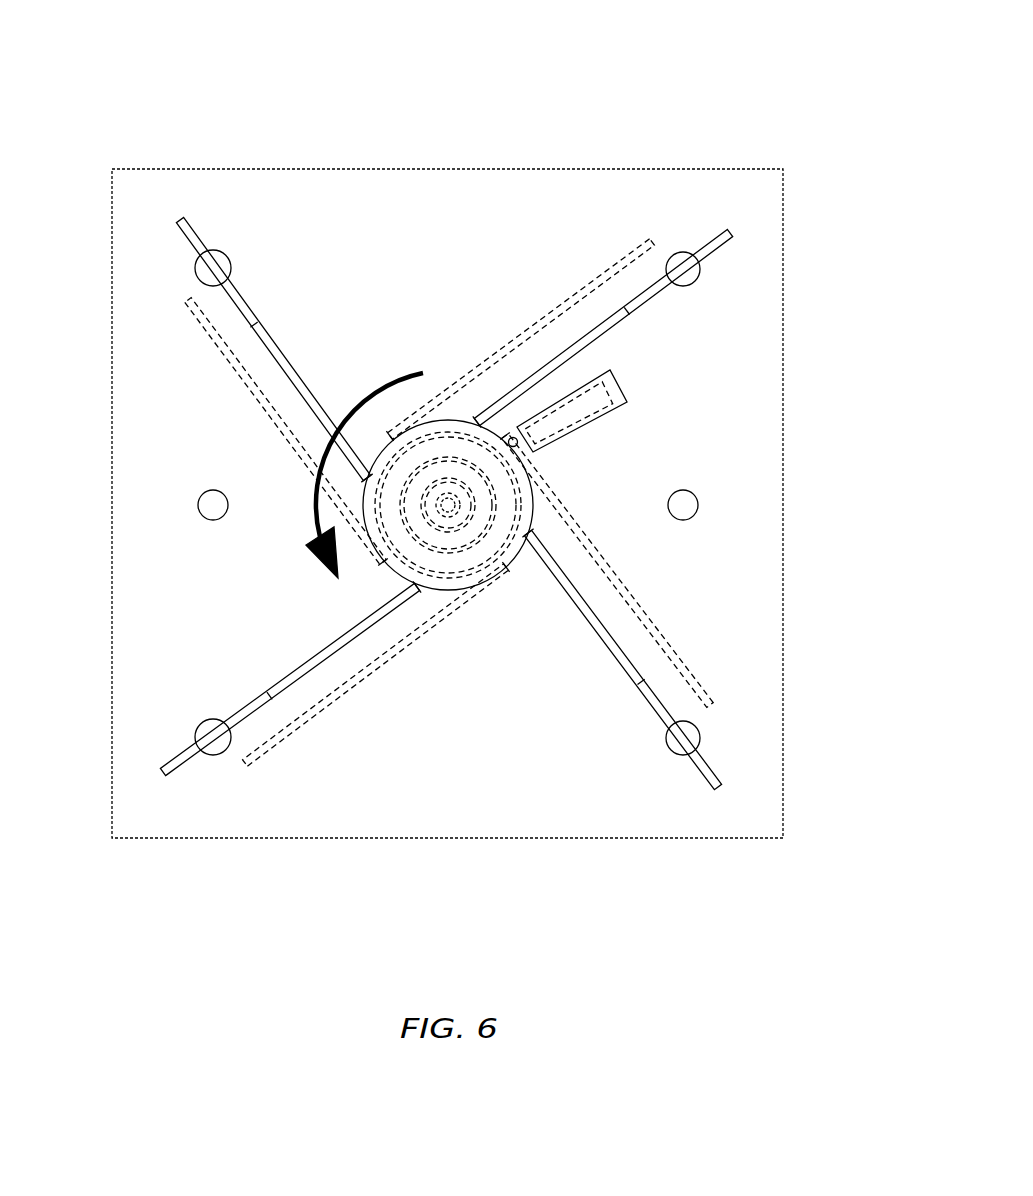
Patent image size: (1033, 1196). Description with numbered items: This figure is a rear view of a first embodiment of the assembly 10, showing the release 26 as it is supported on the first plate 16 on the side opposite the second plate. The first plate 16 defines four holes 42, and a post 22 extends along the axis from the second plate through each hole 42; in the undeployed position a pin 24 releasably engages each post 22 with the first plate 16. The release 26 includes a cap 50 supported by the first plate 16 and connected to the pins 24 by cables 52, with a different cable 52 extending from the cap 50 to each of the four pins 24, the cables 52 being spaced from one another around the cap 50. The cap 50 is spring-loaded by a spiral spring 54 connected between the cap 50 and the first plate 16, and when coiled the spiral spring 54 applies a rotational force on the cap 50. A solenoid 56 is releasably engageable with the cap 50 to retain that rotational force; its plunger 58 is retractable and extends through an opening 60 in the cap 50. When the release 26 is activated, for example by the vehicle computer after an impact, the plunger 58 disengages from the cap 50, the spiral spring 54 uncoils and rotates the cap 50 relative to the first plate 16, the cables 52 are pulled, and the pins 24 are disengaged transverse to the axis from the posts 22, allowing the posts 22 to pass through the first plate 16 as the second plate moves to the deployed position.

The assembly 10 is at (640, 64).
The first plate 16 is at (375, 168).
The post 22 is at (215, 263).
The pin 24 is at (186, 228).
The release 26 is at (460, 410).
The hole 42 is at (229, 256).
The cap 50 is at (534, 505).
The cable 52 is at (292, 368).
The spiral spring 54 is at (512, 548).
The solenoid 56 is at (618, 406).
The plunger 58 is at (563, 444).
The opening 60 is at (510, 438).